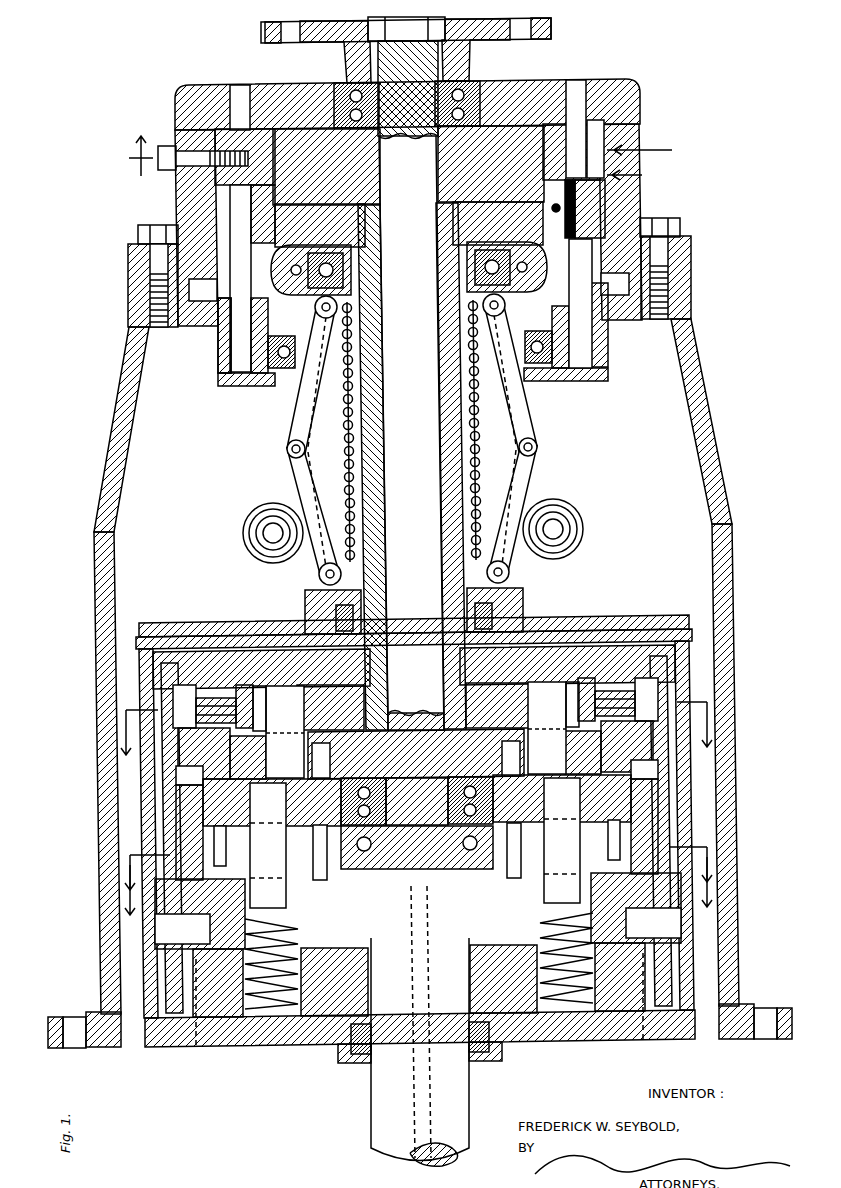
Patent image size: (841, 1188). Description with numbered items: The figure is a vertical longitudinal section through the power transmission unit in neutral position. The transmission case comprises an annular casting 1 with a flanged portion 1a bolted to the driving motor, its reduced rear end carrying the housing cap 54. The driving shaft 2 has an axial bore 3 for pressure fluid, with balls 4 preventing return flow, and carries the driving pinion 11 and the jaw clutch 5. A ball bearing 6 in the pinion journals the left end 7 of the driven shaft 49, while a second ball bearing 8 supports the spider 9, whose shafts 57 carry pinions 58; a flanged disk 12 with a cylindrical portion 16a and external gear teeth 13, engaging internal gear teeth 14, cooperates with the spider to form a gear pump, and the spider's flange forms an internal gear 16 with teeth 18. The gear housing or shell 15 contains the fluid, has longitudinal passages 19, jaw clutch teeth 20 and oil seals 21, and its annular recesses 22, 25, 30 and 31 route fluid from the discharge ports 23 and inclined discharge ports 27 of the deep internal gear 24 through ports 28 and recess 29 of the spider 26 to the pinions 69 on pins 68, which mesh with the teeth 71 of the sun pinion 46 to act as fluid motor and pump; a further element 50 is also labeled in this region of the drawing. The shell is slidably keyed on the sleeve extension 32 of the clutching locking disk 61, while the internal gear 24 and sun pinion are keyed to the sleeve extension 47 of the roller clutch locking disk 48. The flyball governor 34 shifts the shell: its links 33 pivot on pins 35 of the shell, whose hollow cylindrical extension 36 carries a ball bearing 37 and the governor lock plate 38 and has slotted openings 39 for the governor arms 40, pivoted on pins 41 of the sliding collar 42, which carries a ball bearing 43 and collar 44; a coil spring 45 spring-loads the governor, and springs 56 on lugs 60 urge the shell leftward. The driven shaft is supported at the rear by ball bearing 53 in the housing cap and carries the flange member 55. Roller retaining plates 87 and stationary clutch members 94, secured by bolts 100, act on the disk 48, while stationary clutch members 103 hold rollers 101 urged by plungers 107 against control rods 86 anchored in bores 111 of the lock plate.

The annular casting 1 is at (94, 642).
The flanged portion 1a is at (766, 1000).
The driving shaft 2 is at (364, 1100).
The axial bore 3 is at (400, 1162).
The balls 4 is at (150, 217).
The jaw clutch 5 is at (347, 955).
The ball bearing 6 is at (417, 847).
The left end of driven shaft 7 is at (417, 801).
The second ball bearing 8 is at (417, 801).
The spider 9 is at (417, 800).
The driving pinion 11 is at (305, 840).
The flanged disk 12 is at (437, 514).
The external gear teeth 13 is at (413, 1012).
The internal gear teeth 14 is at (191, 935).
The gear housing or shell 15 is at (200, 616).
The internal gear 16 is at (415, 750).
The cylindrical portion 16a is at (419, 980).
The teeth 18 is at (232, 680).
The longitudinal passages 19 is at (160, 767).
The jaw clutch teeth 20 is at (419, 980).
The oil seals 21 is at (331, 1048).
The annular recess 22 is at (419, 856).
The discharge ports 23 is at (418, 911).
The deep internal gear 24 is at (417, 820).
The annular recess 25 is at (165, 792).
The spider 26 is at (415, 755).
The inclined discharge ports 27 is at (175, 810).
The ports 28 is at (405, 754).
The recess 29 is at (414, 759).
The annular recess 30 is at (415, 703).
The annular recess 31 is at (146, 707).
The sleeve extension 32 is at (336, 432).
The links 33 is at (330, 452).
The flyball governor 34 is at (241, 505).
The pins 35 is at (318, 555).
The hollow cylindrical extension 36 is at (290, 431).
The ball bearing 37 is at (279, 380).
The governor lock plate 38 is at (210, 371).
The slotted openings 39 is at (516, 567).
The flyball governor arms 40 is at (280, 442).
The pins 41 is at (308, 303).
The sliding collar 42 is at (346, 274).
The ball bearing 43 is at (457, 271).
The collar 44 is at (275, 264).
The coil spring 45 is at (483, 430).
The sun pinion 46 is at (415, 706).
The sleeve extension 47 is at (381, 470).
The roller clutch locking disk 48 is at (408, 165).
The driven shaft 49 is at (407, 703).
The spring seat 50 is at (296, 930).
The ball bearing 53 is at (471, 78).
The housing cap 54 is at (215, 80).
The flange member 55 is at (268, 35).
The springs 56 is at (419, 961).
The shafts 57 is at (415, 843).
The pinion 58 is at (417, 843).
The lugs 60 is at (594, 985).
The clutching locking disk 61 is at (409, 224).
The pins 68 is at (416, 730).
The pinions 69 is at (411, 694).
The teeth of sun pinion 71 is at (416, 706).
The control rods 86 is at (231, 292).
The roller retaining plates 87 is at (230, 278).
The stationary clutch members 94 is at (262, 214).
The bolts 100 is at (159, 138).
The rollers 101 is at (570, 303).
The stationary clutch members 103 is at (593, 149).
The plungers 107 is at (563, 209).
The bores 111 is at (218, 343).